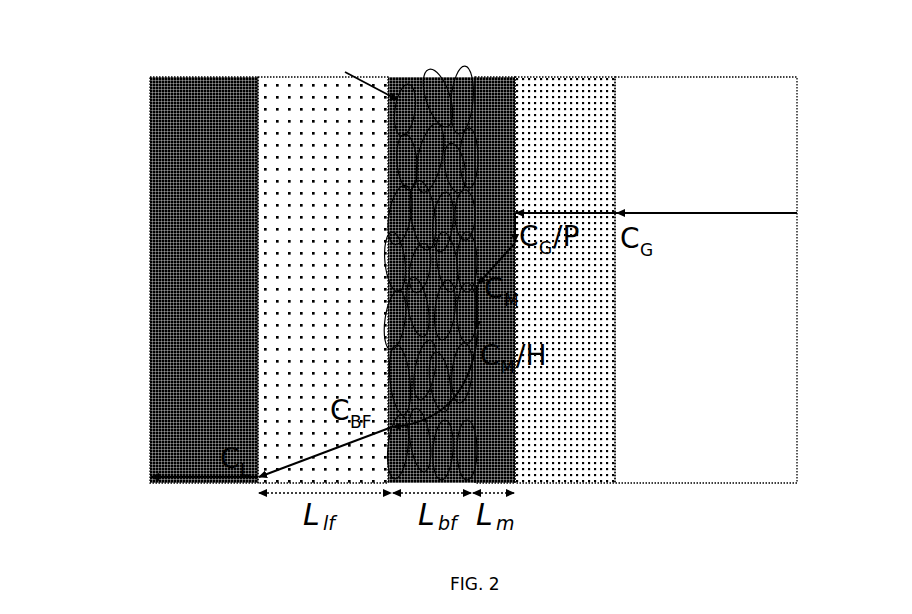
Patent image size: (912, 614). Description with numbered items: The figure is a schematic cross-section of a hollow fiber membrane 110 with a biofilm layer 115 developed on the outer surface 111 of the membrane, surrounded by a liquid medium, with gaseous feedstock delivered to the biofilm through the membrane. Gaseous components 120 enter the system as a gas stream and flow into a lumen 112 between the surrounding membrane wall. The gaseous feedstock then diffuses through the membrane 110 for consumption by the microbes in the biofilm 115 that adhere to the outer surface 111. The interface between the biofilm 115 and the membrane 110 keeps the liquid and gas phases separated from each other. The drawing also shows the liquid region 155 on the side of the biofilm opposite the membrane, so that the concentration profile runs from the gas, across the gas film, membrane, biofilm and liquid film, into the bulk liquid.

The hollow fiber membrane 110 is at (500, 95).
The outer surface 111 is at (388, 240).
The lumen 112 is at (585, 325).
The biofilm layer 115 is at (400, 128).
The gaseous components 120 is at (735, 213).
The liquid 155 is at (205, 175).